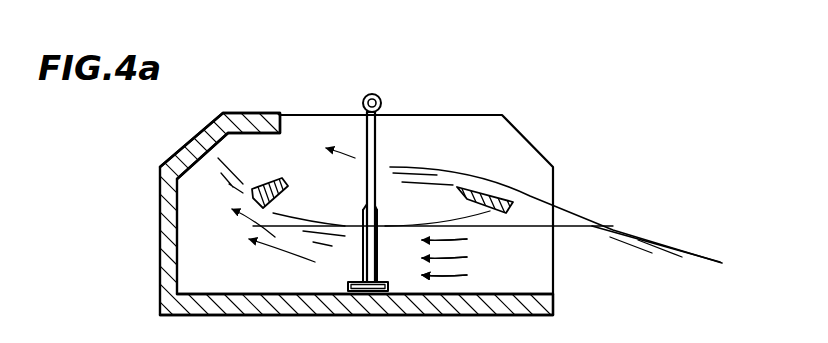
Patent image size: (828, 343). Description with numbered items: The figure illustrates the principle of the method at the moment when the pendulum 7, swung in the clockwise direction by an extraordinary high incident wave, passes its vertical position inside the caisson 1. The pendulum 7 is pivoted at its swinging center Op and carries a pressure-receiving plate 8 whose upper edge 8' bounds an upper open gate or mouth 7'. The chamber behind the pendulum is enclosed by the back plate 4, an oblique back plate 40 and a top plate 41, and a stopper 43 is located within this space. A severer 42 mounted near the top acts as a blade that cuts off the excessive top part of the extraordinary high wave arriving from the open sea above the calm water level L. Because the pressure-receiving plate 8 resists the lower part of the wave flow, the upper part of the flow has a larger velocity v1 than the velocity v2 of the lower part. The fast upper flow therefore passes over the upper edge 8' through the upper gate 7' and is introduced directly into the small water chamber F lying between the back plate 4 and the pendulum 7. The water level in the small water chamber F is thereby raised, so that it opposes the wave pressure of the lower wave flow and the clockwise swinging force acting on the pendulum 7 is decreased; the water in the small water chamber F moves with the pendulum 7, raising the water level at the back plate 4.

The caisson 1 is at (147, 190).
The back plate 4 is at (176, 262).
The pendulum 7 is at (397, 197).
The upper open gate or mouth of the pendulum 7' is at (354, 125).
The pressure-receiving plate of the pendulum 8 is at (377, 250).
The upper edge of the pressure-receiving plate 8' is at (349, 193).
The oblique back plate 40 is at (190, 152).
The top plate 41 is at (229, 113).
The severer 42 is at (500, 200).
The stopper 43 is at (281, 180).
The small water chamber F is at (202, 270).
The calm water level L is at (596, 227).
The swinging center of the pendulum Op is at (382, 101).
The wave velocity at the upper part of the wave flow v1 is at (389, 164).
The wave velocity at the lower part of the wave flow v2 is at (342, 219).